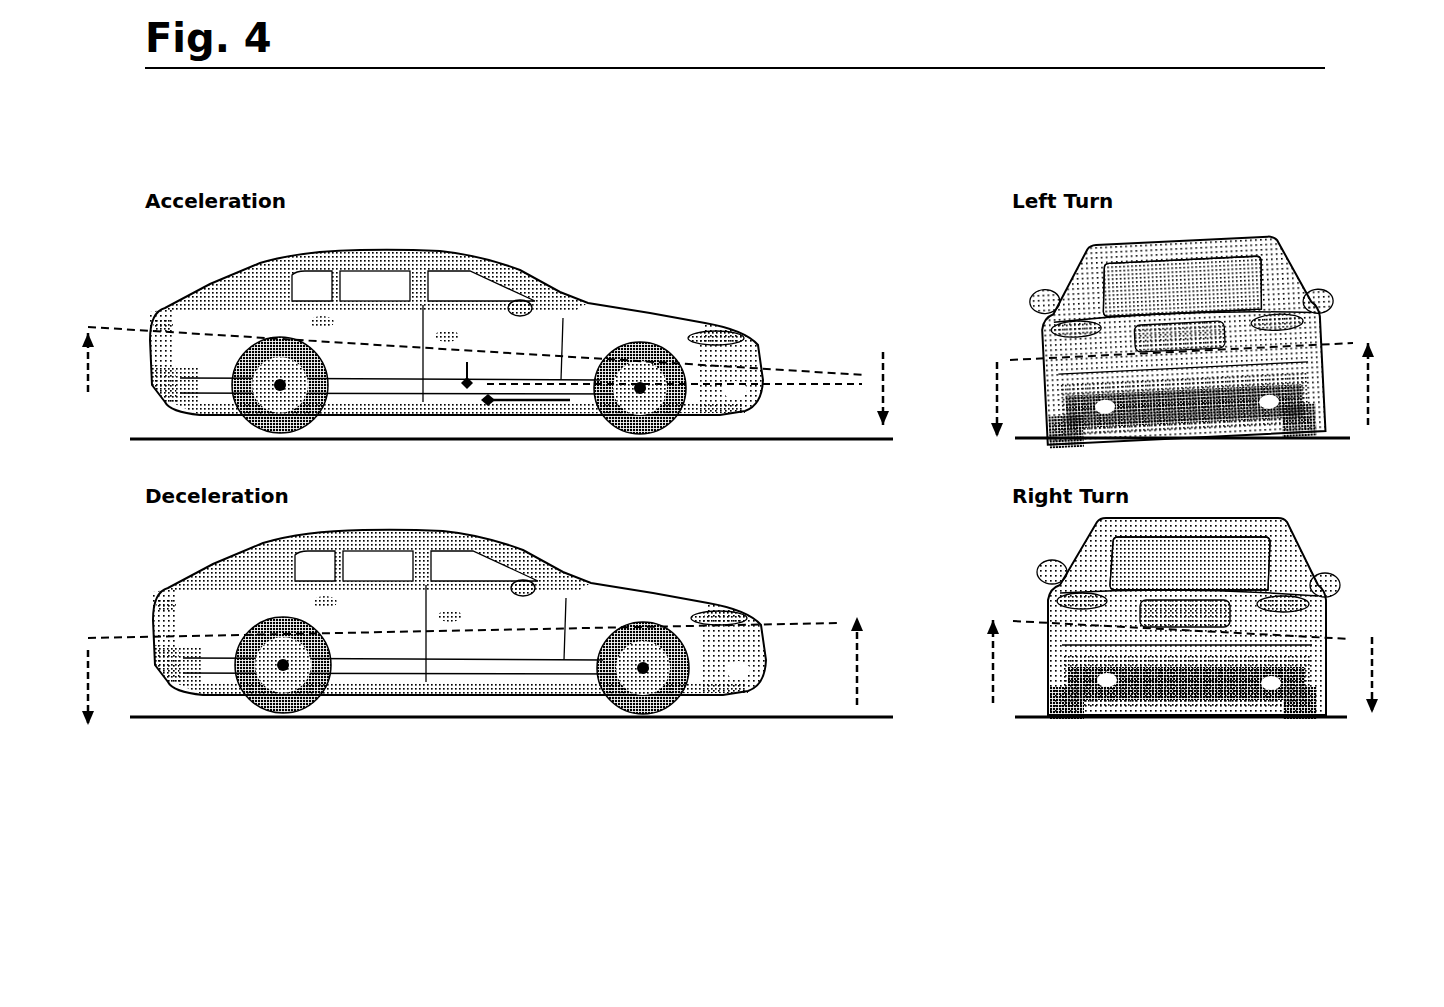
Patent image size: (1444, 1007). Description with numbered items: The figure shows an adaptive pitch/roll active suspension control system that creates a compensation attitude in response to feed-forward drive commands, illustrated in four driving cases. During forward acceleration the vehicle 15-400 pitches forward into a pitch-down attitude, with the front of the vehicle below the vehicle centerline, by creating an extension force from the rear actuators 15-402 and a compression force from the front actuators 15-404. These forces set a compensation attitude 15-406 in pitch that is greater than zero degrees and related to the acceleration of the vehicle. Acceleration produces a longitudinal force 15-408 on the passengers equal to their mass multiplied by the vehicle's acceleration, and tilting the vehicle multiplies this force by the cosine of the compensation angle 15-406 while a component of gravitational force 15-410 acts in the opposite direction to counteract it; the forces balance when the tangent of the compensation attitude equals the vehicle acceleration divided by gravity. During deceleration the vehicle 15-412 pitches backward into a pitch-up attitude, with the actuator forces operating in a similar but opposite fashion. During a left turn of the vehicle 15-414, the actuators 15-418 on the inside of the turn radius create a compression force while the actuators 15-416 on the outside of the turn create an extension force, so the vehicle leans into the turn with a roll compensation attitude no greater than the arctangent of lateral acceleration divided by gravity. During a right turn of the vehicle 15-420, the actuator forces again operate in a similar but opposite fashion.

The vehicle 15-400 is at (395, 237).
The rear actuators 15-402 is at (253, 328).
The front actuators 15-404 is at (650, 340).
The compensation attitude 15-406 is at (560, 368).
The longitudinal force 15-408 is at (522, 416).
The component of gravitational force 15-410 is at (455, 372).
The vehicle 15-412 is at (693, 585).
The vehicle 15-414 is at (1272, 242).
The actuators on the outside of the turn 15-416 is at (1320, 333).
The actuators on the inside of the turn 15-418 is at (1030, 343).
The vehicle 15-420 is at (1283, 521).